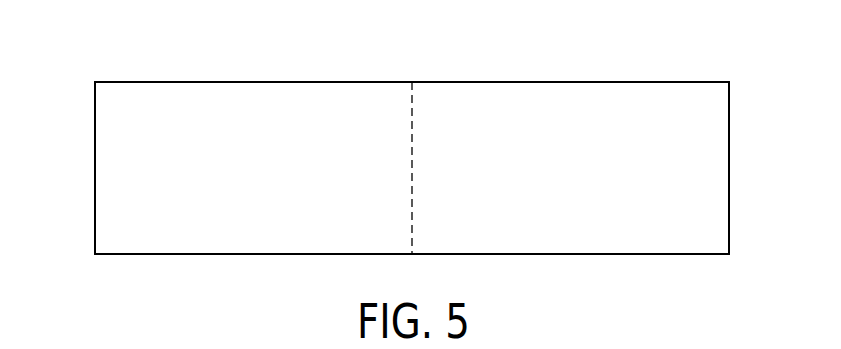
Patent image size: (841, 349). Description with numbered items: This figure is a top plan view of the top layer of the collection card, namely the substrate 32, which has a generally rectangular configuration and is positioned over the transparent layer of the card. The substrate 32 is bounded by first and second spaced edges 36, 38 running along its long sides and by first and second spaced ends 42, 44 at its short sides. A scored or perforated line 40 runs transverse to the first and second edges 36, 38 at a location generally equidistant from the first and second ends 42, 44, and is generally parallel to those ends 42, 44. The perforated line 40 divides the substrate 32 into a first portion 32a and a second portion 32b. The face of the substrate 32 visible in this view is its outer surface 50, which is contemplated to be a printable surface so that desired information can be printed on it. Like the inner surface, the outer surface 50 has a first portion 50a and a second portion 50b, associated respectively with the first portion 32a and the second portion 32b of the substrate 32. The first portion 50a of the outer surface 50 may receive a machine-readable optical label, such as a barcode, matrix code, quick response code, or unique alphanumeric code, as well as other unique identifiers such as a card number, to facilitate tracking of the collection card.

The substrate 32 is at (744, 194).
The first portion of substrate 32a is at (259, 64).
The second portion of substrate 32b is at (604, 63).
The first edge 36 is at (282, 82).
The second edge 38 is at (570, 254).
The scored or perforated line 40 is at (413, 168).
The first end 42 is at (95, 165).
The second end 44 is at (730, 127).
The outer surface 50 is at (596, 178).
The first portion of outer surface 50a is at (209, 237).
The second portion of outer surface 50b is at (568, 100).